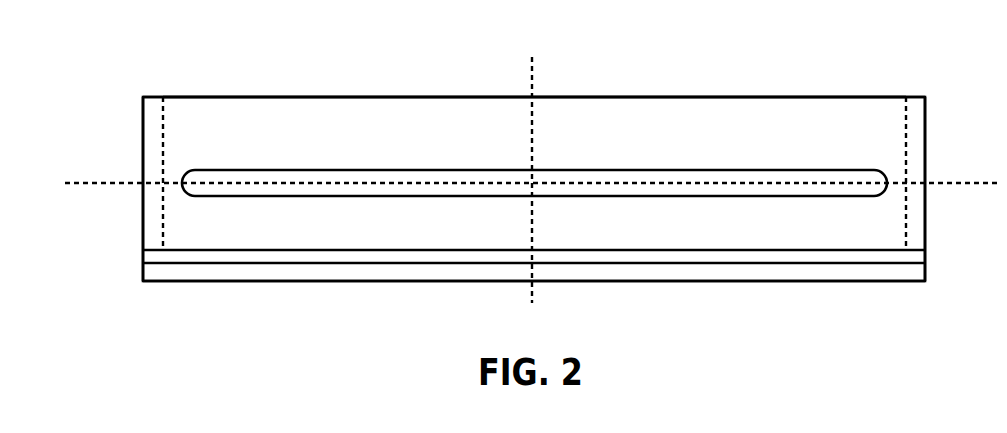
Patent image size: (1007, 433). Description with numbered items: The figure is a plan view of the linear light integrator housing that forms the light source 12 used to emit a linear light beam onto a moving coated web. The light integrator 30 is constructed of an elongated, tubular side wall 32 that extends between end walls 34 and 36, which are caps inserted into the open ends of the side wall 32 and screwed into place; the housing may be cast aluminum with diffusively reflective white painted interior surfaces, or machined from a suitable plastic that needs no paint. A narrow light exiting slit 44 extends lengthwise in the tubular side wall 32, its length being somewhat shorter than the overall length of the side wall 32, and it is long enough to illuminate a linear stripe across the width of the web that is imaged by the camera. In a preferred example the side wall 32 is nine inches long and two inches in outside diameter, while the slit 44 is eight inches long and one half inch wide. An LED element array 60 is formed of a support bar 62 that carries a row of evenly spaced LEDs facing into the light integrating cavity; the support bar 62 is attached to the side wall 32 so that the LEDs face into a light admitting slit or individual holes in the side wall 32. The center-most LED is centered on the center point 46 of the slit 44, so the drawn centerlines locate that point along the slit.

The light source 12 is at (403, 68).
The light integrator 30 is at (442, 80).
The tubular side wall 32 is at (845, 140).
The end wall 34 is at (143, 221).
The end wall 36 is at (926, 238).
The light exiting slit 44 is at (730, 172).
The center point of slit 46 is at (534, 183).
The LED element array 60 is at (613, 305).
The support bar 62 is at (325, 272).